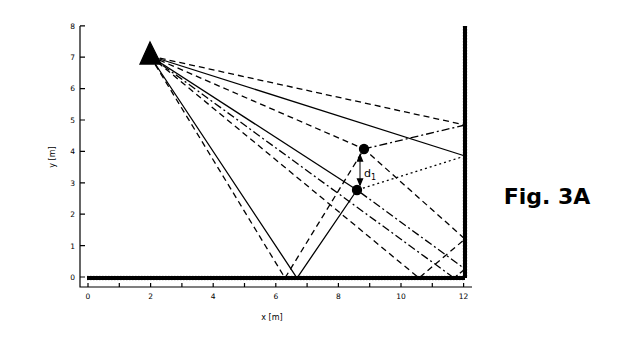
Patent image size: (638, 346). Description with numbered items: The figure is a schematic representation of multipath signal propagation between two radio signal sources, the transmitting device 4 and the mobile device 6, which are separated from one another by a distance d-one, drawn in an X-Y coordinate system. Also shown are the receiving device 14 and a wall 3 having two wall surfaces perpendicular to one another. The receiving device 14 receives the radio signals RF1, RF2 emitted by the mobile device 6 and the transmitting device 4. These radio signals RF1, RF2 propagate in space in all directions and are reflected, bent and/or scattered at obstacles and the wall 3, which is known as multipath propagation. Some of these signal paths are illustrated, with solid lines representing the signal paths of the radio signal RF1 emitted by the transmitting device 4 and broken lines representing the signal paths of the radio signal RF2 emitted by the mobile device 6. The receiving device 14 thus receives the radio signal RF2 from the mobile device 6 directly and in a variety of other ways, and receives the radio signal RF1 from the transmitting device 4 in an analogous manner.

The wall 3 is at (175, 278).
The receiving device 14 is at (158, 51).
The mobile device 6 is at (369, 152).
The transmitting device 4 is at (362, 193).
The radio signal RF1 is at (447, 153).
The radio signal RF2 is at (341, 98).